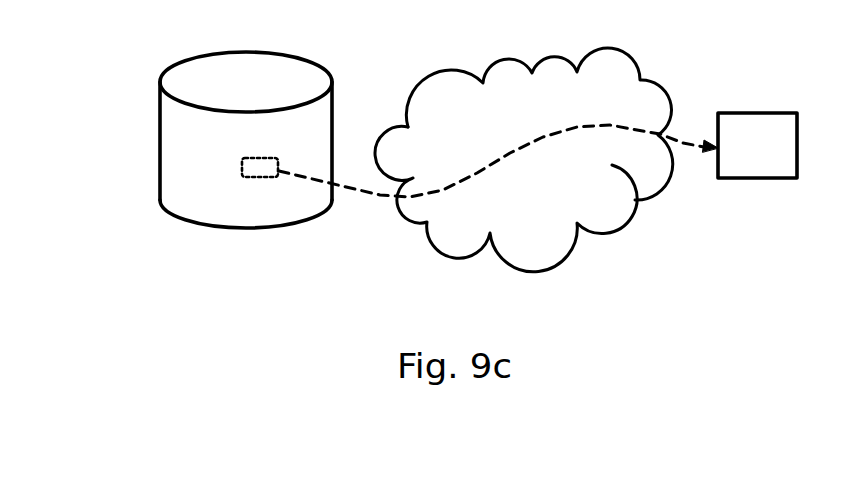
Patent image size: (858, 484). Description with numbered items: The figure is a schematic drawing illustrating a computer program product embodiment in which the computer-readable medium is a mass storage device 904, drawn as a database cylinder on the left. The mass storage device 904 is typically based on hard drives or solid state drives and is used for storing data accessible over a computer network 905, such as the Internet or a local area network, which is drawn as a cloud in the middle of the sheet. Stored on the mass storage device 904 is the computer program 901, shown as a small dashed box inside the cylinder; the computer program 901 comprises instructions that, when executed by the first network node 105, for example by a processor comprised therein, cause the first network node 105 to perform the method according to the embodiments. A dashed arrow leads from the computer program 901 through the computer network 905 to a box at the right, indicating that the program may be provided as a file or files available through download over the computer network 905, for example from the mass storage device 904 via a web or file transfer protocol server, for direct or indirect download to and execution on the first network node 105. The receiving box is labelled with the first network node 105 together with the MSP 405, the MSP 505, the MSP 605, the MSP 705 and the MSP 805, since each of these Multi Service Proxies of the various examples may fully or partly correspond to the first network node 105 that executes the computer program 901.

The mass storage device 904 is at (160, 138).
The computer program 901 is at (253, 178).
The computer network 905 is at (447, 250).
The first network node 105 is at (757, 194).
The MSP 405 is at (757, 194).
The MSP 505 is at (757, 194).
The MSP 605 is at (757, 194).
The MSP 705 is at (757, 194).
The MSP 805 is at (733, 178).